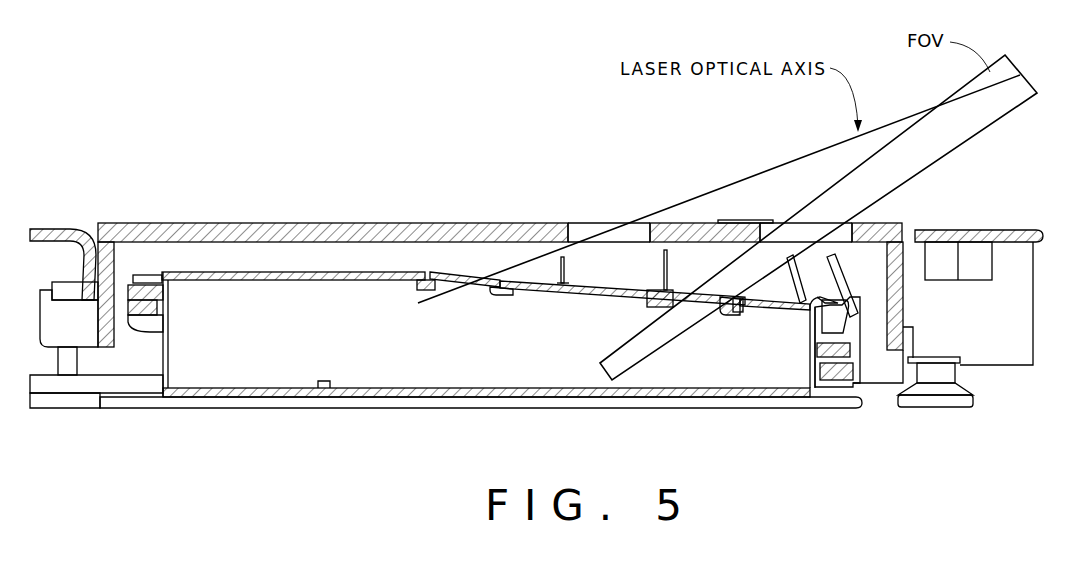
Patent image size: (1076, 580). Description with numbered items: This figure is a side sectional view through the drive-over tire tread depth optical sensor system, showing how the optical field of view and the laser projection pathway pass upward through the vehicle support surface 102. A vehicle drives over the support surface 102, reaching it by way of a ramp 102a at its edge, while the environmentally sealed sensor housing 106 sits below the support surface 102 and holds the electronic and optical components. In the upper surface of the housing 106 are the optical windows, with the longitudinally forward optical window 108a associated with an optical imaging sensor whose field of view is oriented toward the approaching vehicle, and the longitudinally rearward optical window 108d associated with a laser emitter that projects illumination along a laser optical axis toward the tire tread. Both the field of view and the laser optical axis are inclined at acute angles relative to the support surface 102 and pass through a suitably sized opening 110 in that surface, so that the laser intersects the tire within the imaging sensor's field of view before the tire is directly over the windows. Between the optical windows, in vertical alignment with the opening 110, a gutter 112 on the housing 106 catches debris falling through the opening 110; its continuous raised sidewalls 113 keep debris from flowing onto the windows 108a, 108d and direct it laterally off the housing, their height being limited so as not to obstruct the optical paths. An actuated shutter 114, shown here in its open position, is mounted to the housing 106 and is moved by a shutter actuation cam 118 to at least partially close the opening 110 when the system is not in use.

The vehicle support surface 102 is at (328, 222).
The ramp 102a is at (757, 220).
The sensor housing 106 is at (188, 272).
The optical window 108a is at (690, 298).
The optical window 108d is at (472, 272).
The opening 110 is at (606, 223).
The gutter 112 is at (583, 272).
The raised sidewall 113 is at (648, 247).
The actuated shutter 114 is at (838, 278).
The shutter actuation cam 118 is at (850, 335).